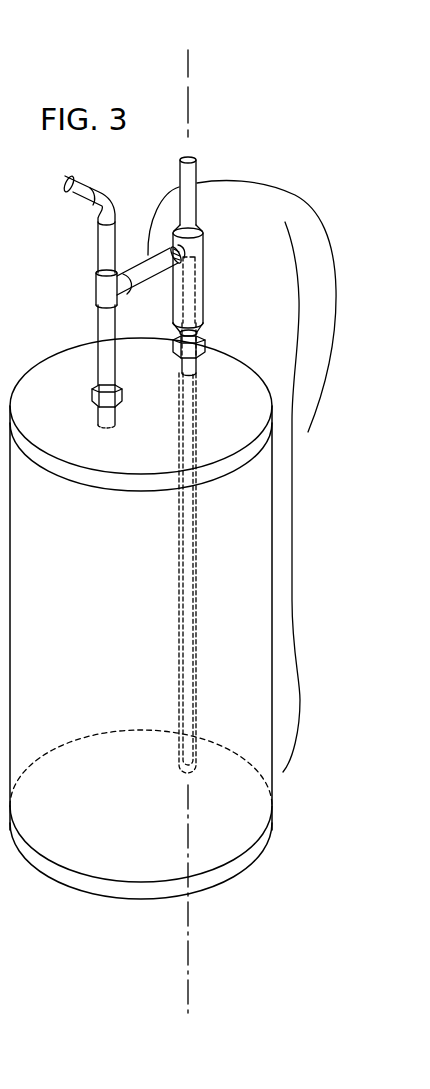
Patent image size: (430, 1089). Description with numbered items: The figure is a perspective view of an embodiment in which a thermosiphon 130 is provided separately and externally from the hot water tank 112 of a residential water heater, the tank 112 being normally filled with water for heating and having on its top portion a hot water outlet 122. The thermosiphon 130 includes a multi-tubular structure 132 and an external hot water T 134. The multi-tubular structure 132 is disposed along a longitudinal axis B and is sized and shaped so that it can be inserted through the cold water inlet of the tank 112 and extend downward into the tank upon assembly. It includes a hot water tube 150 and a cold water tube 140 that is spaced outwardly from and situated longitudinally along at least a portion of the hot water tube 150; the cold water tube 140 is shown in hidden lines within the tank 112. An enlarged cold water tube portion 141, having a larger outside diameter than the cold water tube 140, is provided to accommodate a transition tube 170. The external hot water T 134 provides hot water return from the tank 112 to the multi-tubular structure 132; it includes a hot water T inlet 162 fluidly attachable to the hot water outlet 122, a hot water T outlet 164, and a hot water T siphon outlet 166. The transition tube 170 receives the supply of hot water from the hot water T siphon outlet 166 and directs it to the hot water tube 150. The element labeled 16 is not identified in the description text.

The longitudinal axis B is at (186, 84).
The container 16 is at (170, 618).
The tank 112 is at (272, 786).
The hot water outlet 122 is at (96, 410).
The thermosiphon 130 is at (269, 476).
The multi-tubular structure 132 is at (345, 433).
The external hot water T 134 is at (308, 432).
The cold water tube 140 is at (198, 538).
The enlarged cold water tube portion 141 is at (203, 300).
The hot water tube 150 is at (197, 505).
The hot water T inlet 162 is at (98, 378).
The hot water T outlet 164 is at (98, 276).
The hot water T siphon outlet 166 is at (171, 268).
The transition tube 170 is at (190, 249).